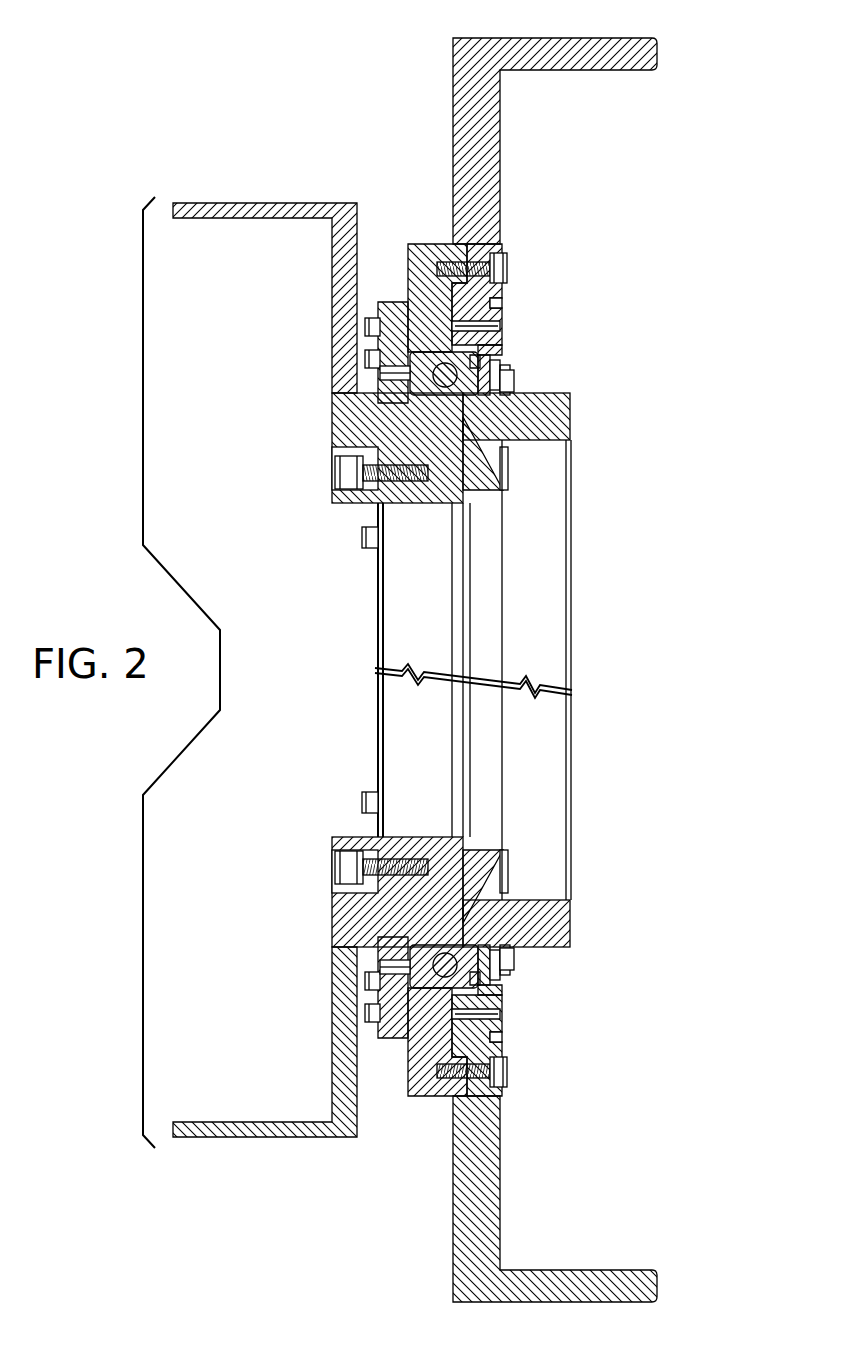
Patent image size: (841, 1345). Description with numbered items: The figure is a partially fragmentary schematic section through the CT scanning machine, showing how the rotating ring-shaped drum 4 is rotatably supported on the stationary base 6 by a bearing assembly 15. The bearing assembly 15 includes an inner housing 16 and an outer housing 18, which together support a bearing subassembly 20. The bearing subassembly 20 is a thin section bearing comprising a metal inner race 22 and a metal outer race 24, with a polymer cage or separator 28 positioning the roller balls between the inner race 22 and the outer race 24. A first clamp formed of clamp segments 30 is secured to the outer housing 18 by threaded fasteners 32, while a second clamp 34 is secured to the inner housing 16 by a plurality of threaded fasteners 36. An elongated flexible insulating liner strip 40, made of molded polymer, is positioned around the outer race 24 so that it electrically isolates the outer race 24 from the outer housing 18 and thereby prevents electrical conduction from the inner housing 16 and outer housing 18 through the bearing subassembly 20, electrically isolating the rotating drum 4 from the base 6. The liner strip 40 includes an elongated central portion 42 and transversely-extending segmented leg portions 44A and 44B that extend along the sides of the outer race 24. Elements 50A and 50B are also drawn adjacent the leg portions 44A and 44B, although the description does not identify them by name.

The rotating ring-shaped assembly or drum 4 is at (273, 197).
The base 6 is at (634, 37).
The bearing assembly 15 is at (492, 332).
The inner housing 16 is at (345, 452).
The outer housing 18 is at (497, 300).
The bearing subassembly 20 is at (515, 388).
The inner race 22 is at (510, 389).
The outer race 24 is at (480, 362).
The cage or separator 28 is at (395, 405).
The clamp segments 30 is at (385, 301).
The threaded fasteners 32 is at (372, 326).
The second clamp 34 is at (570, 392).
The threaded fasteners 36 is at (510, 462).
The flexible insulating liner strip 40 is at (430, 380).
The elongated central portion 42 is at (488, 350).
The segmented leg portion 44A is at (440, 384).
The segmented leg portion 44B is at (503, 383).
The spring 50A is at (374, 372).
The spring 50B is at (507, 386).